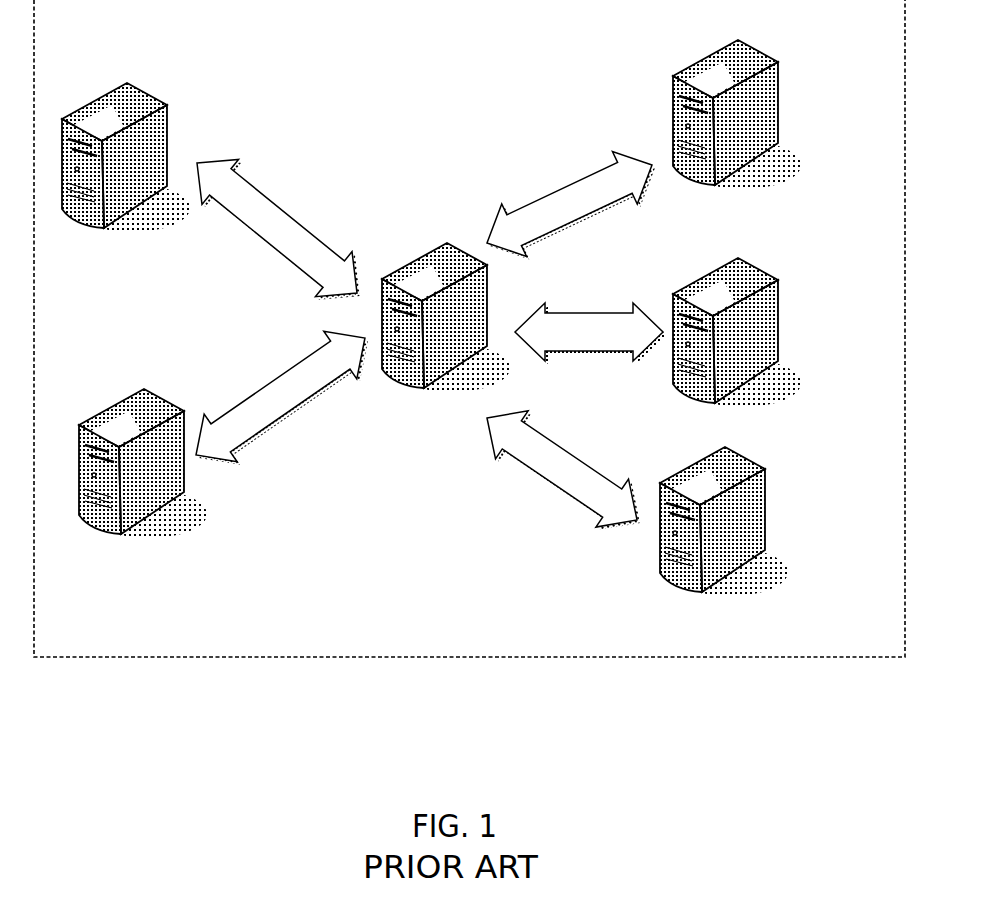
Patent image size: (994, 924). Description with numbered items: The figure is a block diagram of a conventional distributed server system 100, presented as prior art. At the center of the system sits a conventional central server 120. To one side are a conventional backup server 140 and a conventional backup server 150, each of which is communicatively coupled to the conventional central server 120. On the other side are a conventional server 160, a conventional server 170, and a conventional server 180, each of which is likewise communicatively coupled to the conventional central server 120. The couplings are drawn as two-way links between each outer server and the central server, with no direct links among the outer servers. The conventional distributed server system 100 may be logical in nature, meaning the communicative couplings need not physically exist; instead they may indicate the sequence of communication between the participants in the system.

The conventional distributed server system 100 is at (470, 658).
The conventional central server 120 is at (435, 315).
The conventional backup server 140 is at (117, 155).
The conventional backup server 150 is at (132, 460).
The conventional server 160 is at (725, 112).
The conventional server 170 is at (725, 332).
The conventional server 180 is at (715, 520).